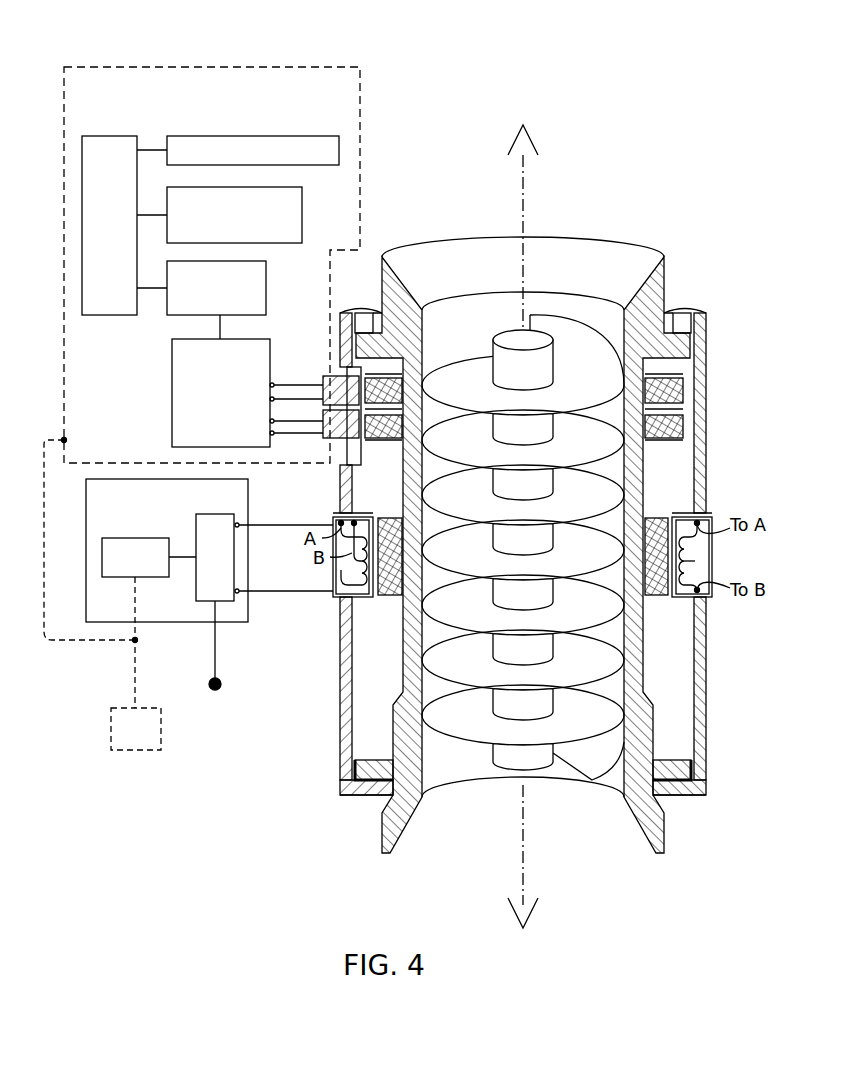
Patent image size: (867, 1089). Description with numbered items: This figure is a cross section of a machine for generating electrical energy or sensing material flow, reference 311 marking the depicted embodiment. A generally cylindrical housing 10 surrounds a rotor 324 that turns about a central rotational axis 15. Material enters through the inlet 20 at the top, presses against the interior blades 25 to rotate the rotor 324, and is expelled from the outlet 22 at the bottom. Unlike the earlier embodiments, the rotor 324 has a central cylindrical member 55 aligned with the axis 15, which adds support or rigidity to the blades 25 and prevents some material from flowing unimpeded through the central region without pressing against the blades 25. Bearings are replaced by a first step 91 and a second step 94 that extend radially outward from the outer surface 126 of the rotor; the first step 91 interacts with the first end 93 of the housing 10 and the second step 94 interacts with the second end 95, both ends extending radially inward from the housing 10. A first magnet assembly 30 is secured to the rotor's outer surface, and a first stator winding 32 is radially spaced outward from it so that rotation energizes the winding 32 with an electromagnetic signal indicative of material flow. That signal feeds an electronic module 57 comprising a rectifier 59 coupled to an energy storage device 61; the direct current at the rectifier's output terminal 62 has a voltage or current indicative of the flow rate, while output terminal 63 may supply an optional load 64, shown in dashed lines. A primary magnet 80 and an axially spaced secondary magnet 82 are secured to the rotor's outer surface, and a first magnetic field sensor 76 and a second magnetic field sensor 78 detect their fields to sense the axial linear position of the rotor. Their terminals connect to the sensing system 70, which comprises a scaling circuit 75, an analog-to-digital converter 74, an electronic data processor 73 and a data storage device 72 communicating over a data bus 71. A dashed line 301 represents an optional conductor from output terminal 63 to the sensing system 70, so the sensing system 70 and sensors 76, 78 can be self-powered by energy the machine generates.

The sensing system 70 is at (244, 66).
The data bus 71 is at (122, 135).
The data storage device 72 is at (290, 135).
The electronic data processor 73 is at (304, 212).
The analog-to-digital converter 74 is at (270, 300).
The scaling circuit 75 is at (172, 408).
The first magnetic field sensor 76 is at (322, 380).
The second magnetic field sensor 78 is at (322, 437).
The primary magnet 80 is at (402, 382).
The secondary magnet 82 is at (383, 440).
The electronic module 57 is at (248, 622).
The rectifier 59 is at (205, 567).
The energy storage device 61 is at (125, 567).
The output terminal 62 is at (215, 645).
The output terminal 63 is at (133, 690).
The optional load 64 is at (126, 739).
The dashed line 301 is at (78, 647).
The central rotational axis 15 is at (528, 162).
The inlet 20 is at (487, 265).
The blades 25 is at (465, 383).
The central cylindrical member 55 is at (536, 379).
The rotor 324 is at (573, 488).
The housing 10 is at (706, 352).
The first end 93 is at (683, 323).
The first step 91 is at (703, 320).
The first stator winding 32 is at (336, 575).
The first magnet assembly 30 is at (392, 590).
The outer surface 126 is at (403, 687).
The second step 94 is at (355, 770).
The second end 95 is at (358, 795).
The device 311 is at (730, 876).
The outlet 22 is at (566, 815).